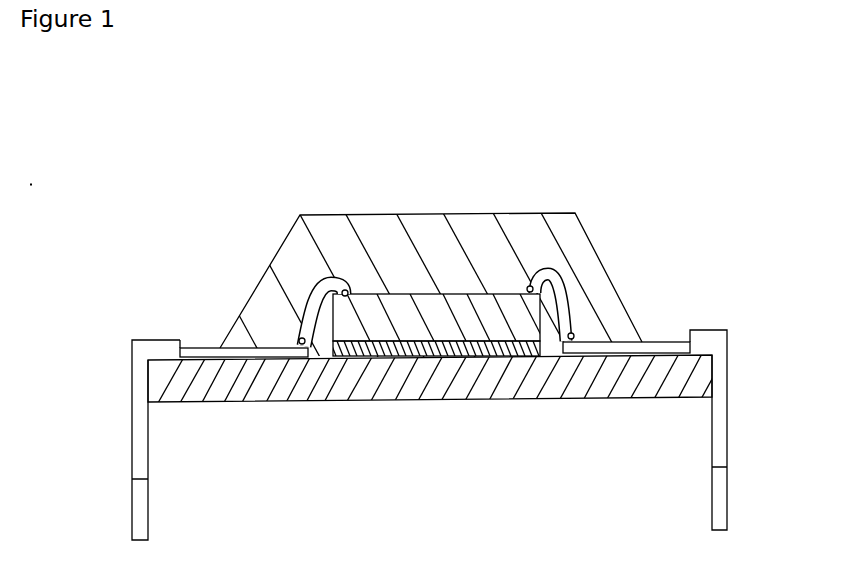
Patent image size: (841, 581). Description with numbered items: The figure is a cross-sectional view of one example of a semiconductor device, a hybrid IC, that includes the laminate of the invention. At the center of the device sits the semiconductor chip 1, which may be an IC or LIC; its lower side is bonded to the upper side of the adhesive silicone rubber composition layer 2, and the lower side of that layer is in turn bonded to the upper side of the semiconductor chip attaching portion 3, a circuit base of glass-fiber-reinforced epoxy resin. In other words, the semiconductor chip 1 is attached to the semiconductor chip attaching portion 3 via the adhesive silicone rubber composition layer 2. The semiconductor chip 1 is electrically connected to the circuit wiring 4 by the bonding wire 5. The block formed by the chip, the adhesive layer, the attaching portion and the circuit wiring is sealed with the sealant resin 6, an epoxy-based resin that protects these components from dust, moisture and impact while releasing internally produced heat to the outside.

The semiconductor chip 1 is at (414, 324).
The adhesive silicone rubber composition layer 2 is at (482, 357).
The semiconductor chip attaching portion 3 is at (460, 377).
The circuit wiring 4 is at (663, 347).
The bonding wire 5 is at (568, 287).
The sealant resin 6 is at (388, 244).